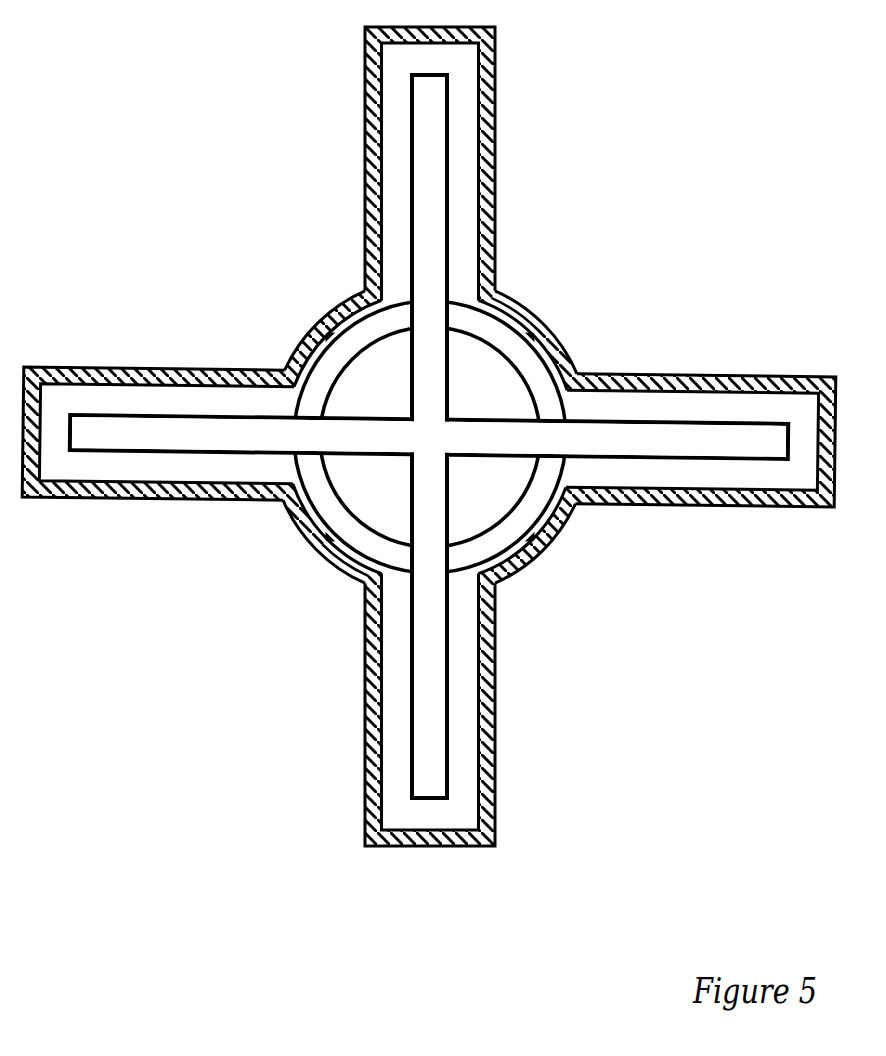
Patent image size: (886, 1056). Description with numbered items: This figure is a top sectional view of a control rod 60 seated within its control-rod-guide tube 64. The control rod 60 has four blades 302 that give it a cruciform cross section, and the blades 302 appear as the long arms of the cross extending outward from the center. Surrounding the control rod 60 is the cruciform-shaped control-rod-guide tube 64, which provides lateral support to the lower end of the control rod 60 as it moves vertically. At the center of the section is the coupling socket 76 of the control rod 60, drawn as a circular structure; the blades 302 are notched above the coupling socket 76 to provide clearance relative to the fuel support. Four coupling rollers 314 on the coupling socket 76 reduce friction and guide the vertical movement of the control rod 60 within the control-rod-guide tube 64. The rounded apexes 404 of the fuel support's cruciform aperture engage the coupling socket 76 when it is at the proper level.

The control rod 60 is at (568, 410).
The control-rod-guide tube 64 is at (493, 240).
The coupling socket 76 is at (567, 523).
The coupling rollers 314 is at (553, 338).
The rounded apexes 404 is at (354, 322).
The blades 302 is at (203, 437).